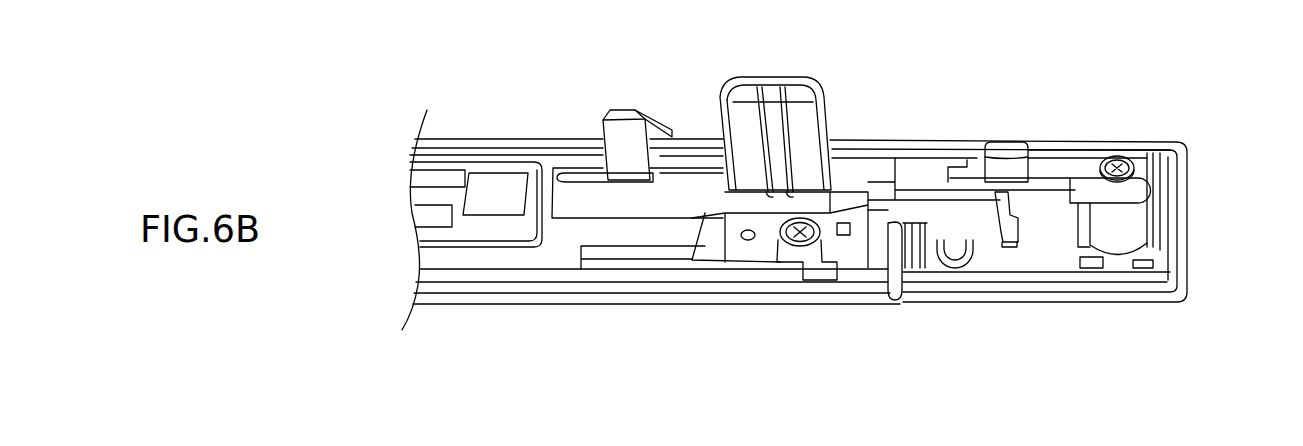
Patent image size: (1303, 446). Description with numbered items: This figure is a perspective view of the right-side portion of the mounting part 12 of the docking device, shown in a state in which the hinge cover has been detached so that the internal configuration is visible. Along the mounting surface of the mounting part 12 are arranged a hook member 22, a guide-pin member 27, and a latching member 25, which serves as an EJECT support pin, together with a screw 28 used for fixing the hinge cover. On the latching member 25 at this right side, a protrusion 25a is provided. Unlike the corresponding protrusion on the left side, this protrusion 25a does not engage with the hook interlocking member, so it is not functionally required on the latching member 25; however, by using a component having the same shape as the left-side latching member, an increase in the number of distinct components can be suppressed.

The mounting part 12 is at (1052, 120).
The hook member 22 is at (622, 108).
The guide-pin member 27 is at (768, 78).
The latching member 25 is at (1005, 145).
The protrusion 25a is at (998, 224).
The screw 28 is at (1117, 156).